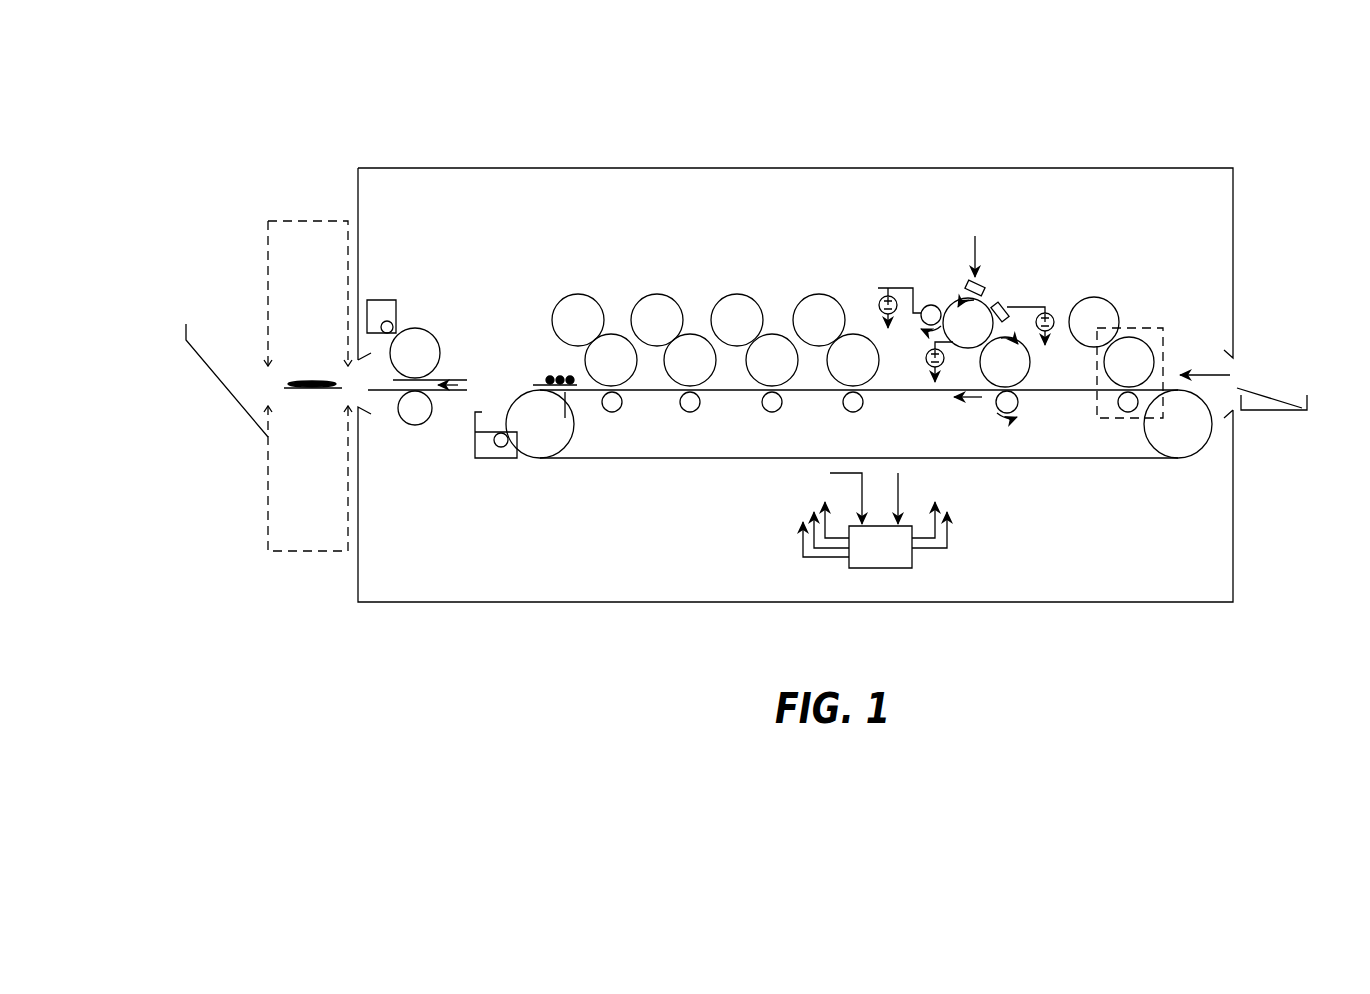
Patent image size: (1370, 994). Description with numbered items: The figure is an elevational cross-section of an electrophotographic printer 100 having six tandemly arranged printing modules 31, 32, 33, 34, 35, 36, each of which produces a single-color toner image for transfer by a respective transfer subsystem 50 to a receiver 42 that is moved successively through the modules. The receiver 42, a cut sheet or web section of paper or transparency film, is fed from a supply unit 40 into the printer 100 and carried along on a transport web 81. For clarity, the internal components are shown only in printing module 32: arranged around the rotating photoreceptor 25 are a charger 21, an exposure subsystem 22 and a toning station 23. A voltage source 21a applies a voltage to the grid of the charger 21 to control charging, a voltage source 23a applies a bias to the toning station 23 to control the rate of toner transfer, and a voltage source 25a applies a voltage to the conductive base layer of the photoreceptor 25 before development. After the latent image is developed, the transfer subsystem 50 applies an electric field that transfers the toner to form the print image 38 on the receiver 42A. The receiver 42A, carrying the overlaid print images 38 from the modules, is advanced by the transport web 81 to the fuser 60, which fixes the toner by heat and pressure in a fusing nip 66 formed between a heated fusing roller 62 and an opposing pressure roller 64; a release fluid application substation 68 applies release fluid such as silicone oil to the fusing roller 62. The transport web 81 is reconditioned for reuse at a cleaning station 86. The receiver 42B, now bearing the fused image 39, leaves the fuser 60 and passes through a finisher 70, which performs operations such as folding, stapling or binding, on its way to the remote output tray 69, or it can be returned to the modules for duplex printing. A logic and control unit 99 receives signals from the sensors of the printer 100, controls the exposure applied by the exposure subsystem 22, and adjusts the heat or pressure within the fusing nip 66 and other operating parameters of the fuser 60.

The electrophotographic printer 100 is at (991, 108).
The finisher 70 is at (299, 552).
The output tray 69 is at (219, 379).
The fused image 39 is at (315, 382).
The receiver 42B is at (337, 389).
The fuser 60 is at (436, 300).
The release fluid application substation 68 is at (372, 300).
The heated fusing roller 62 is at (438, 343).
The pressure roller 64 is at (416, 425).
The fusing nip 66 is at (468, 380).
The transport web 81 is at (1070, 459).
The cleaning station 86 is at (492, 460).
The print image 38 is at (566, 404).
The receiver 42A is at (566, 406).
The printing module 36 is at (577, 281).
The printing module 35 is at (656, 281).
The printing module 34 is at (737, 281).
The printing module 33 is at (819, 281).
The printing module 32 is at (923, 248).
The toning station 23 is at (931, 305).
The voltage source 23a is at (878, 288).
The exposure subsystem 22 is at (979, 283).
The charger 21 is at (1009, 286).
The voltage source 21a is at (1047, 340).
The photoreceptor 25 is at (960, 346).
The voltage source 25a is at (927, 366).
The printing module 31 is at (1093, 290).
The transfer subsystem 50 is at (1135, 420).
The receiver 42 is at (1293, 400).
The supply unit 40 is at (1273, 432).
The logic and control unit 99 is at (892, 568).